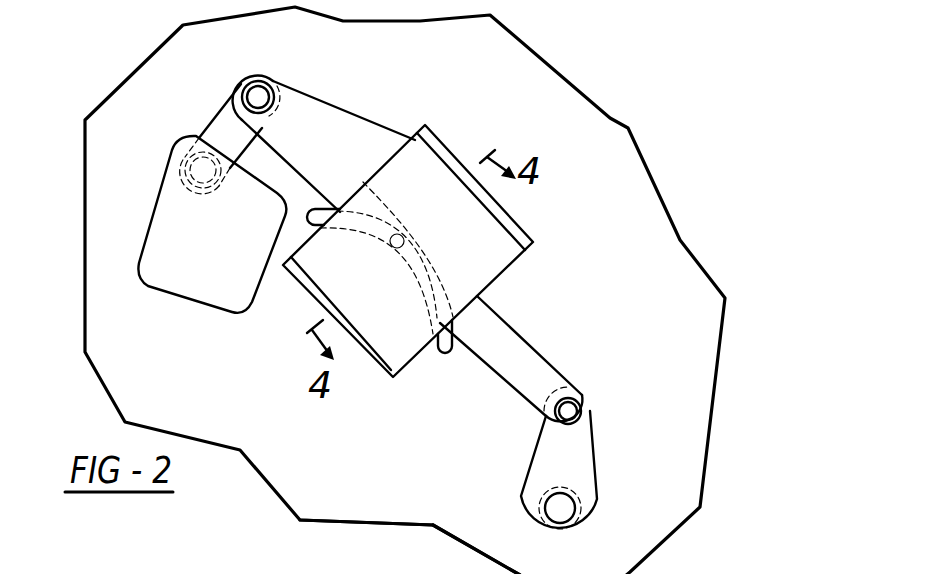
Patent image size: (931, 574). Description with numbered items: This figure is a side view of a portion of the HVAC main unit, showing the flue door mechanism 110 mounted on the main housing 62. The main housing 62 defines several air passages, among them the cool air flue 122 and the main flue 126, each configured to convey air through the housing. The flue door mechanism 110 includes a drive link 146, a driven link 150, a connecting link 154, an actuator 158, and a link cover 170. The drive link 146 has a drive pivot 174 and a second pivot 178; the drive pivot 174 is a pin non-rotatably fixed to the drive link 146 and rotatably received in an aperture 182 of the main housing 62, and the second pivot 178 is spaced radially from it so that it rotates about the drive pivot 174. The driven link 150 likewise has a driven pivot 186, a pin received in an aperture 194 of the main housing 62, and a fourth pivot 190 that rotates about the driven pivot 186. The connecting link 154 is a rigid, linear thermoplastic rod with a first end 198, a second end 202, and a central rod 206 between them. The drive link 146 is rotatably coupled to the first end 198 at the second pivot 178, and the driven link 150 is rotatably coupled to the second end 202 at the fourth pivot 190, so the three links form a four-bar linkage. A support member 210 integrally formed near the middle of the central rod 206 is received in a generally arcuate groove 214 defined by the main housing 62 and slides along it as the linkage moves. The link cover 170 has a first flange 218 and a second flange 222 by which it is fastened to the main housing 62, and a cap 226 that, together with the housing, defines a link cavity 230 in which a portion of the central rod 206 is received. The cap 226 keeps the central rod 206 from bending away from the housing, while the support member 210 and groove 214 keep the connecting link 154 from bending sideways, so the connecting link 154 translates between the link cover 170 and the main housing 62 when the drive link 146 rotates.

The main housing 62 is at (680, 350).
The flue door mechanism 110 is at (174, 101).
The cool air flue 122 is at (476, 549).
The main flue 126 is at (367, 573).
The drive link 146 is at (222, 108).
The driven link 150 is at (597, 463).
The connecting link 154 is at (526, 340).
The actuator 158 is at (180, 258).
The link cover 170 is at (398, 140).
The drive pivot 174 is at (200, 170).
The second pivot 178 is at (258, 97).
The aperture 182 is at (127, 201).
The driven pivot 186 is at (565, 508).
The fourth pivot 190 is at (572, 410).
The aperture 194 is at (572, 522).
The first end 198 is at (302, 98).
The second end 202 is at (519, 393).
The central rod 206 is at (460, 278).
The support member 210 is at (392, 241).
The groove 214 is at (440, 353).
The first flange 218 is at (440, 145).
The second flange 222 is at (383, 363).
The cap 226 is at (487, 244).
The link cavity 230 is at (433, 185).